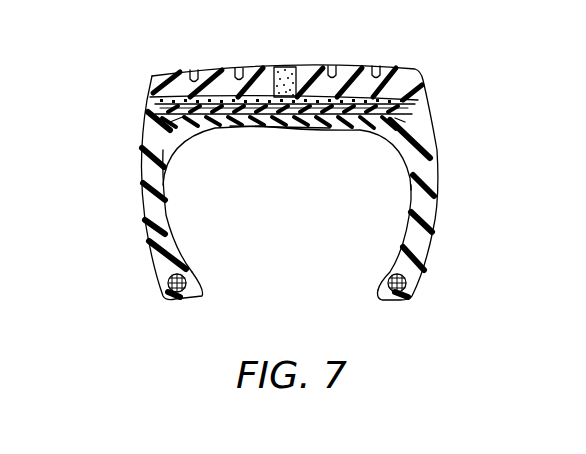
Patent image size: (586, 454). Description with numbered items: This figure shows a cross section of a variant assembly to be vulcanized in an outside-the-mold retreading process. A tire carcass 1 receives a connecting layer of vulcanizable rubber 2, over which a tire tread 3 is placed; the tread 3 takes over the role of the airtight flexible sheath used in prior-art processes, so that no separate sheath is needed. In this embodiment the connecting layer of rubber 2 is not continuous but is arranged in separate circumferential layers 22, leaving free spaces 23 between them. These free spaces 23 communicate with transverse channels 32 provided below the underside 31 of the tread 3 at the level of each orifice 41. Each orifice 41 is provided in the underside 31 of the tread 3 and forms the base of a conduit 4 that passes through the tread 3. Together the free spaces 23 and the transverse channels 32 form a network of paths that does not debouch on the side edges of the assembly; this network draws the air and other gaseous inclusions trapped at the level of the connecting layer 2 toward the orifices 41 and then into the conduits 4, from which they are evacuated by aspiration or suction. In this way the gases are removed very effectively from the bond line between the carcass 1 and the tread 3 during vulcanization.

The tire carcass 1 is at (433, 178).
The connecting layer of vulcanizable rubber 2 is at (415, 113).
The tire tread 3 is at (367, 72).
The conduit 4 is at (291, 70).
The separate circumferential layers 22 is at (258, 105).
The free spaces 23 is at (235, 125).
The underside of the tread 31 is at (383, 101).
The transverse channels 32 is at (175, 100).
The orifice 41 is at (280, 124).